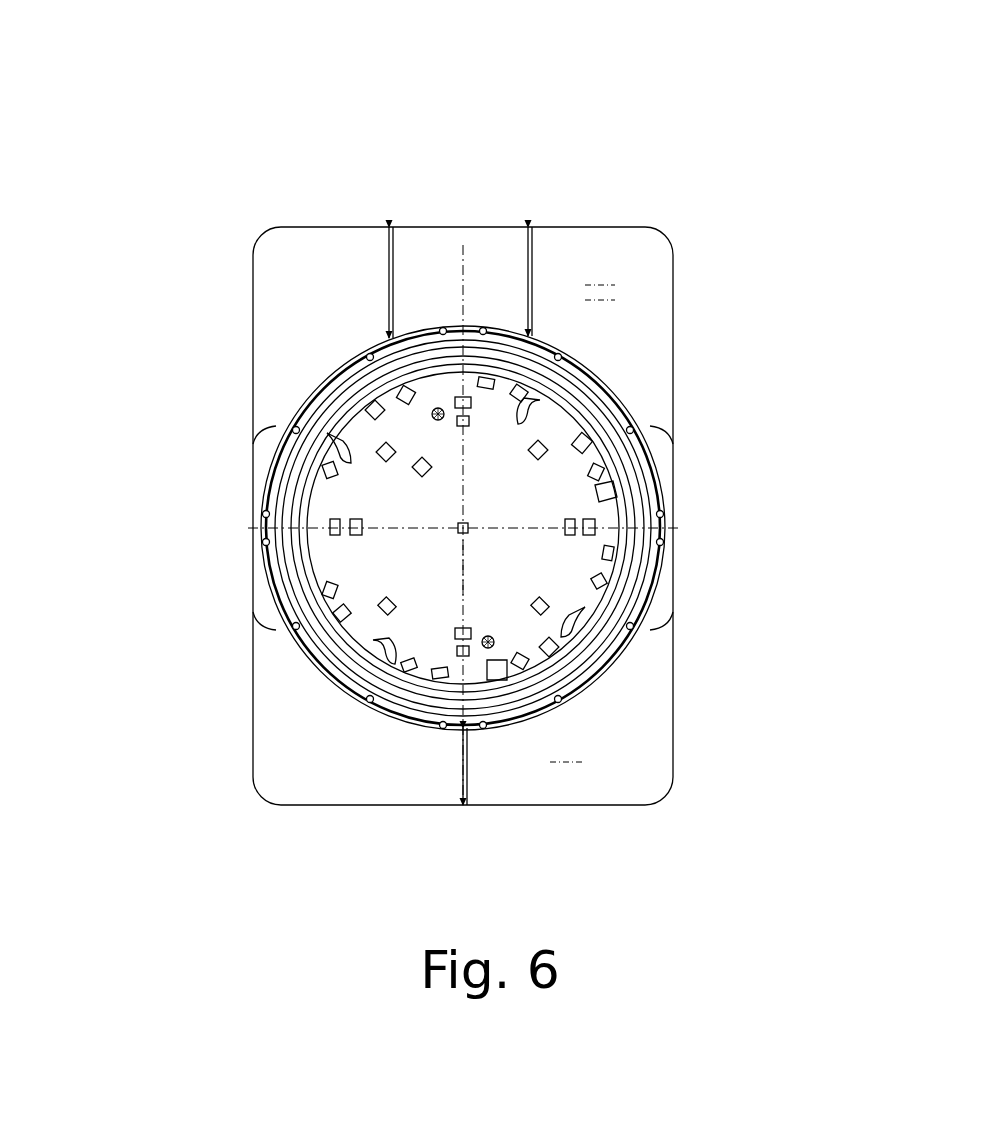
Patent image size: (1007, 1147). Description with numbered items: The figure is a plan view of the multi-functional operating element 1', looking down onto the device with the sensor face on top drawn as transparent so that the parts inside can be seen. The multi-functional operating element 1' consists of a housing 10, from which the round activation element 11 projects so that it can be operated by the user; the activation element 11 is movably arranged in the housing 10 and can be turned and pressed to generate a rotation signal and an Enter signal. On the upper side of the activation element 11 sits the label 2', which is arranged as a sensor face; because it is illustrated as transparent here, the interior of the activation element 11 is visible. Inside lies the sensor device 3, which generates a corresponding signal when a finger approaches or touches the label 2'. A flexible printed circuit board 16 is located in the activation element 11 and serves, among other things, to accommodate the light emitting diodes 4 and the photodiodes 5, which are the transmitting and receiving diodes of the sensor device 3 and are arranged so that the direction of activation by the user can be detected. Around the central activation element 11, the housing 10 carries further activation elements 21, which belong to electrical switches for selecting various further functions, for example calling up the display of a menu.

The multi-functional operating element 1' is at (516, 403).
The label 2' is at (418, 413).
The sensor device 3 is at (380, 527).
The light emitting diodes 4 is at (338, 526).
The photodiodes 5 is at (355, 527).
The housing 10 is at (256, 679).
The activation element 11 is at (630, 477).
The flexible printed circuit board 16 is at (475, 586).
The further activation elements 21 is at (558, 246).